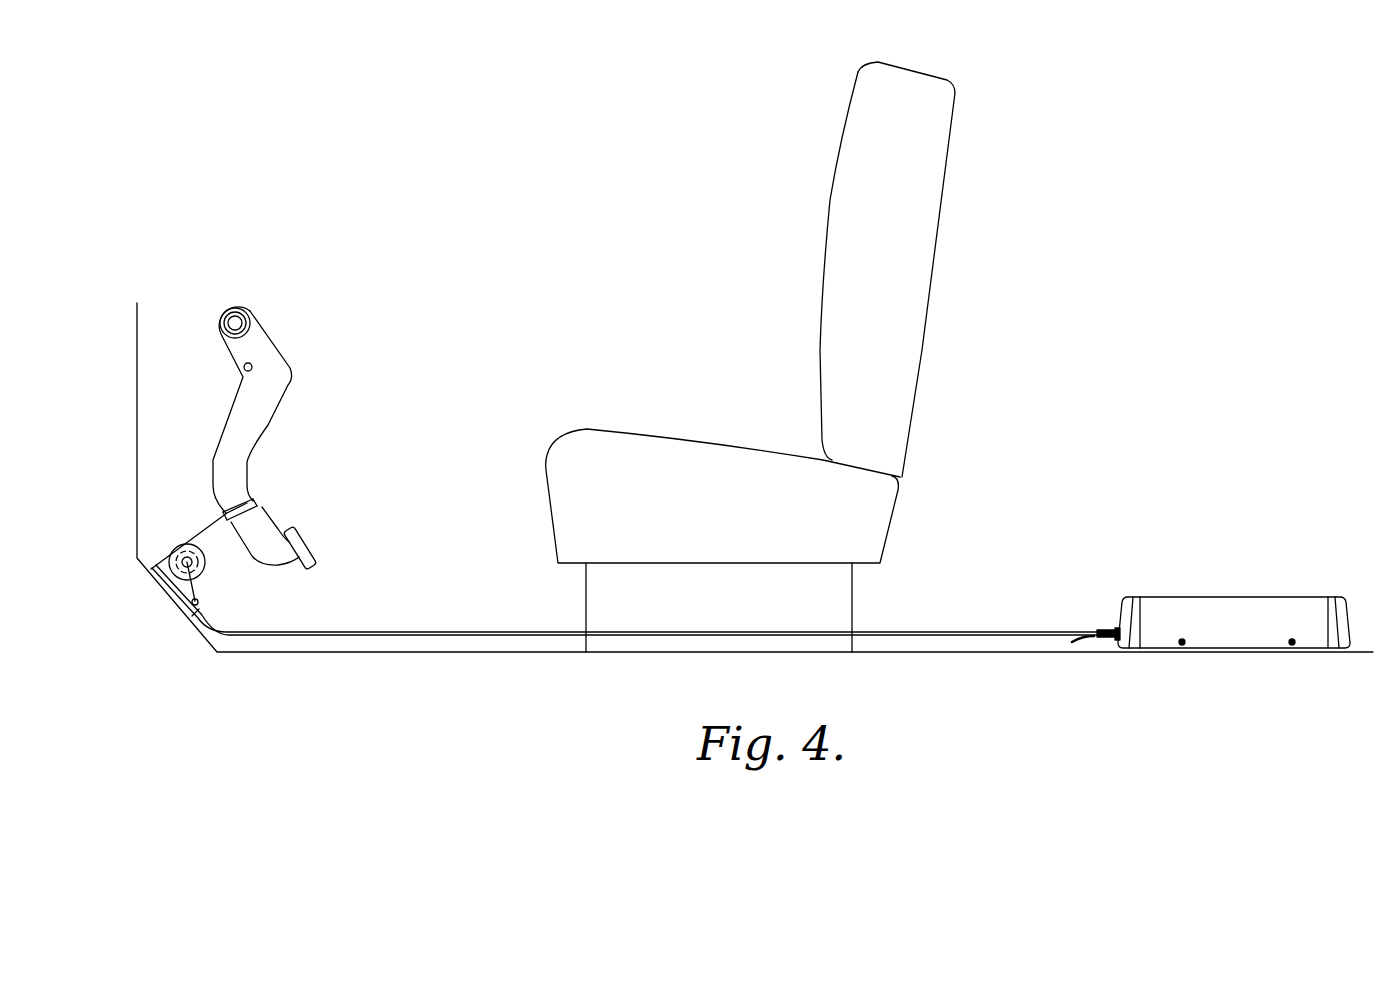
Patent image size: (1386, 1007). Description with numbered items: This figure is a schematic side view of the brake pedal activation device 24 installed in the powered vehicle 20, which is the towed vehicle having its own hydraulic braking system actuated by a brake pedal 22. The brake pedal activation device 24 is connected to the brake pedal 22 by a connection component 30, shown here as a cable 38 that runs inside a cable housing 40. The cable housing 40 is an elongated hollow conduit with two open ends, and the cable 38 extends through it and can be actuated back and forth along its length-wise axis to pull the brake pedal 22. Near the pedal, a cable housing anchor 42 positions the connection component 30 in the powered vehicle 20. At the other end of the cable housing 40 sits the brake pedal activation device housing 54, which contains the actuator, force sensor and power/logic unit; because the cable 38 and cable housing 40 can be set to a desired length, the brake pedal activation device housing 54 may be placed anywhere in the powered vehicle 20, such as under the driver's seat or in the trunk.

The powered vehicle 20 is at (433, 652).
The brake pedal 22 is at (300, 538).
The brake pedal activation device 24 is at (1240, 584).
The connection component 30 is at (933, 617).
The cable 38 is at (205, 530).
The cable housing 40 is at (445, 630).
The cable housing anchor 42 is at (198, 602).
The brake pedal activation device housing 54 is at (1302, 608).